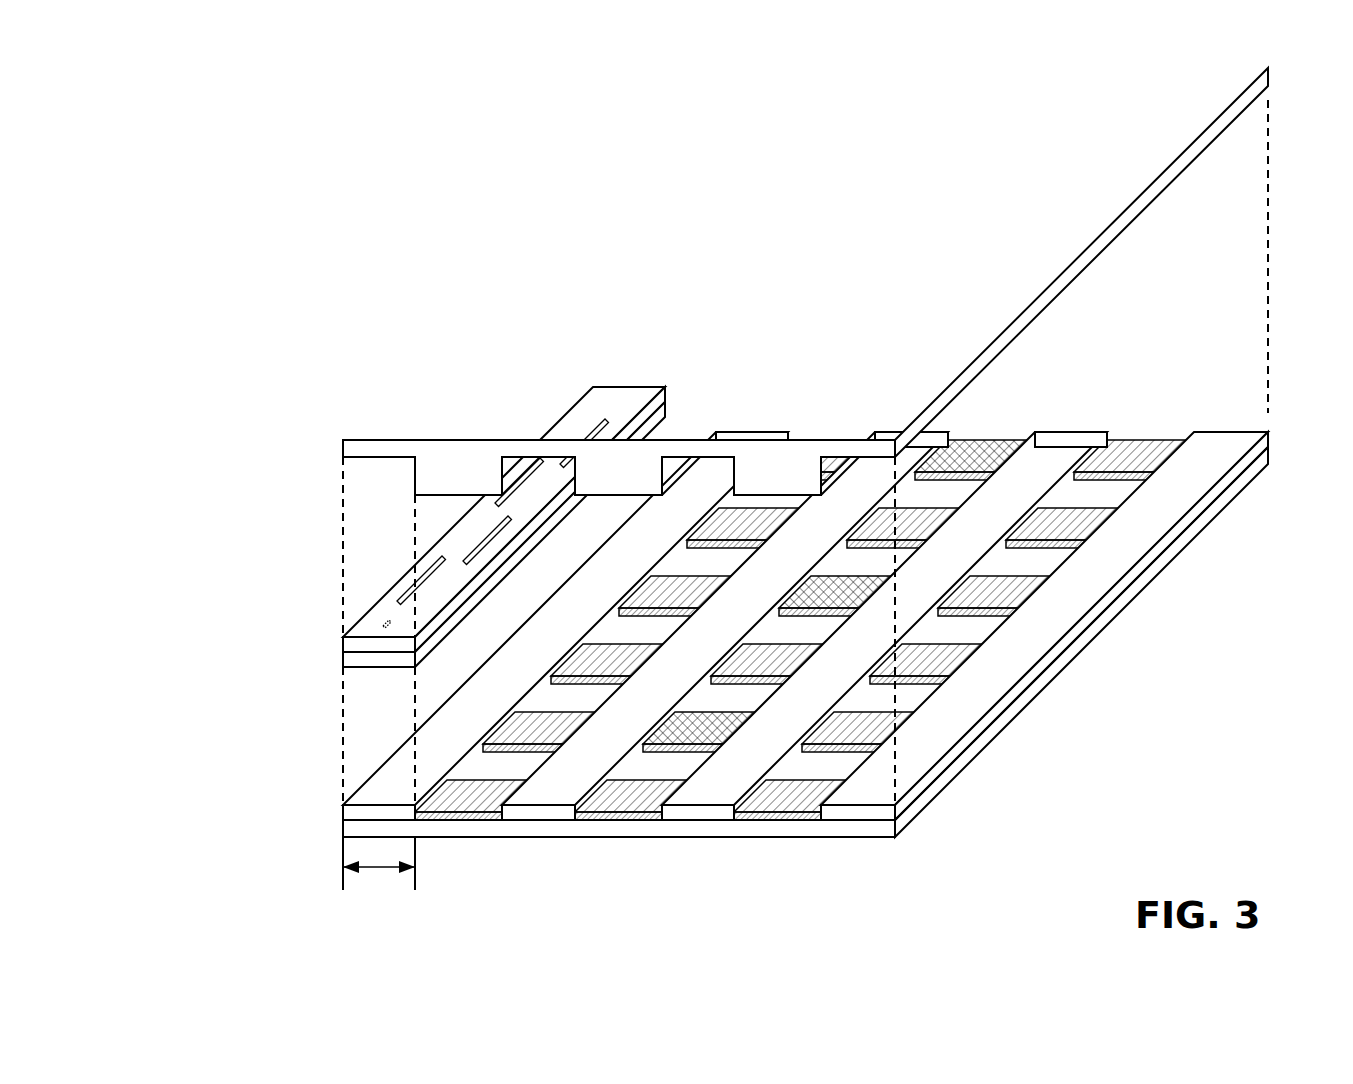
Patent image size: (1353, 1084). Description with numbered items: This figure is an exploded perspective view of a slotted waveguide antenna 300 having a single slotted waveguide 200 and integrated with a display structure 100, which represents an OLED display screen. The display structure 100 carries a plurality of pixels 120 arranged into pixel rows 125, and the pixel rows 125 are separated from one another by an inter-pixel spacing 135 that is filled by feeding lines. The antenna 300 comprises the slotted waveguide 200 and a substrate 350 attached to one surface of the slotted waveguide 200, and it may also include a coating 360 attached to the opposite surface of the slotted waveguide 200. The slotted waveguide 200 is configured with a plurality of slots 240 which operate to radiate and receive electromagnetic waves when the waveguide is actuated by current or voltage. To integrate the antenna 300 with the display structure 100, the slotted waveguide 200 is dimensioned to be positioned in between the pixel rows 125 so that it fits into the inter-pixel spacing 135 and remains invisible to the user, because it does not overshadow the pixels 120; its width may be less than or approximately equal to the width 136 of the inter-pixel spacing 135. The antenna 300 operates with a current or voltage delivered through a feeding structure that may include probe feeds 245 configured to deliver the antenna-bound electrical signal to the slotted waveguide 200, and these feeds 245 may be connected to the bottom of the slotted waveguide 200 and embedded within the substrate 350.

The display structure 100 is at (355, 812).
The pixels 120 is at (490, 813).
The pixel rows 125 is at (997, 430).
The inter-pixel spacing 135 is at (1132, 540).
The width of inter-pixel spacing 136 is at (380, 871).
The slotted waveguide 200 is at (343, 645).
The slots 240 is at (408, 598).
The probe feeds 245 is at (383, 623).
The slotted waveguide antenna 300 is at (685, 396).
The substrate 350 is at (343, 662).
The coating 360 is at (739, 281).